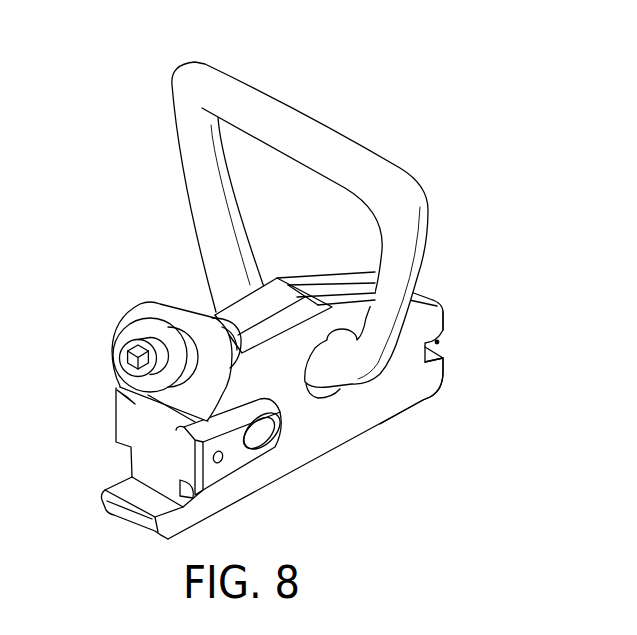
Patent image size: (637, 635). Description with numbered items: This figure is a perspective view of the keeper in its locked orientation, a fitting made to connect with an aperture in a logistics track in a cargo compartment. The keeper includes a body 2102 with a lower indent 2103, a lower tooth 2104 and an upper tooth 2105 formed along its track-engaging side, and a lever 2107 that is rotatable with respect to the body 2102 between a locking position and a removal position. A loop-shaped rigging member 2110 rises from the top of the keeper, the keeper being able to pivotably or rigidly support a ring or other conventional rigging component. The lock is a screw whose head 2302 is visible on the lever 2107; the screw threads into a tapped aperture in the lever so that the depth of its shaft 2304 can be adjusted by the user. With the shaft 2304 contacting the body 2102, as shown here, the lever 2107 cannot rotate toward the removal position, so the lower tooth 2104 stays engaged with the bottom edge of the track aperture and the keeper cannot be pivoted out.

The body 2102 is at (285, 425).
The lower indent 2103 is at (440, 342).
The lower tooth 2104 is at (430, 387).
The upper tooth 2105 is at (137, 521).
The lever 2107 is at (147, 440).
The sling loop 2110 is at (327, 137).
The pivot plate with cap screw 2302 is at (133, 328).
The shaft 2304 is at (200, 315).